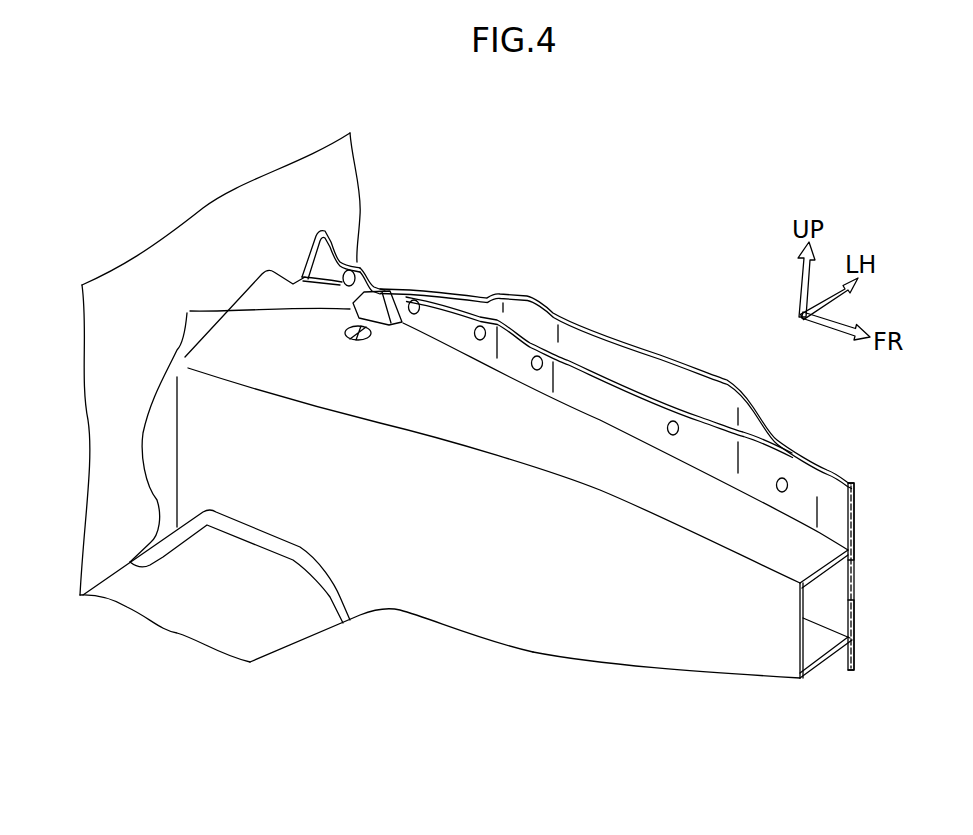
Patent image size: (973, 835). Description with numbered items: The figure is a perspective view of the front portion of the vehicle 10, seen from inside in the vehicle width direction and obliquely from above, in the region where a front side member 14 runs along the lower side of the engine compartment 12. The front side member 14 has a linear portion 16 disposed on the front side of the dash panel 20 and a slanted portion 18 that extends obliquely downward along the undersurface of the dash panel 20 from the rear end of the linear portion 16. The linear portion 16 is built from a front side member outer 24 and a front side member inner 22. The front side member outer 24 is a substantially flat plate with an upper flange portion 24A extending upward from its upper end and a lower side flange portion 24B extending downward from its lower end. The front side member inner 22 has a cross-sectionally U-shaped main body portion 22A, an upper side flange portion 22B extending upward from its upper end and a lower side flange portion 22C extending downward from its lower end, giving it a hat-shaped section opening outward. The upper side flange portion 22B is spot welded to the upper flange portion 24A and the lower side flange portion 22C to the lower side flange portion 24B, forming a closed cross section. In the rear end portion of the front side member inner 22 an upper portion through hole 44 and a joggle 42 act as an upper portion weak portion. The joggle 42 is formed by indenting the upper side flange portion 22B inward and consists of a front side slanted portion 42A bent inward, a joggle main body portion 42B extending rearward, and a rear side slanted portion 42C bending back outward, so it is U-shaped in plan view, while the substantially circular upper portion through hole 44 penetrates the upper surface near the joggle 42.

The vehicle 10 is at (470, 714).
The engine compartment 12 is at (423, 711).
The front side member 14 is at (540, 672).
The linear portion 16 is at (657, 349).
The slanted portion 18 is at (298, 641).
The dash panel 20 is at (208, 228).
The front side member inner 22 is at (578, 357).
The main body portion 22A is at (678, 470).
The upper side flange portion 22B is at (785, 455).
The lower side flange portion 22C is at (835, 662).
The front side member outer 24 is at (827, 470).
The upper flange portion 24A is at (857, 497).
The lower side flange portion 24B is at (857, 657).
The joggle 42 is at (423, 248).
The front side slanted portion 42A is at (393, 294).
The joggle main body portion 42B is at (385, 290).
The rear side slanted portion 42C is at (366, 270).
The upper portion through hole 44 is at (356, 325).